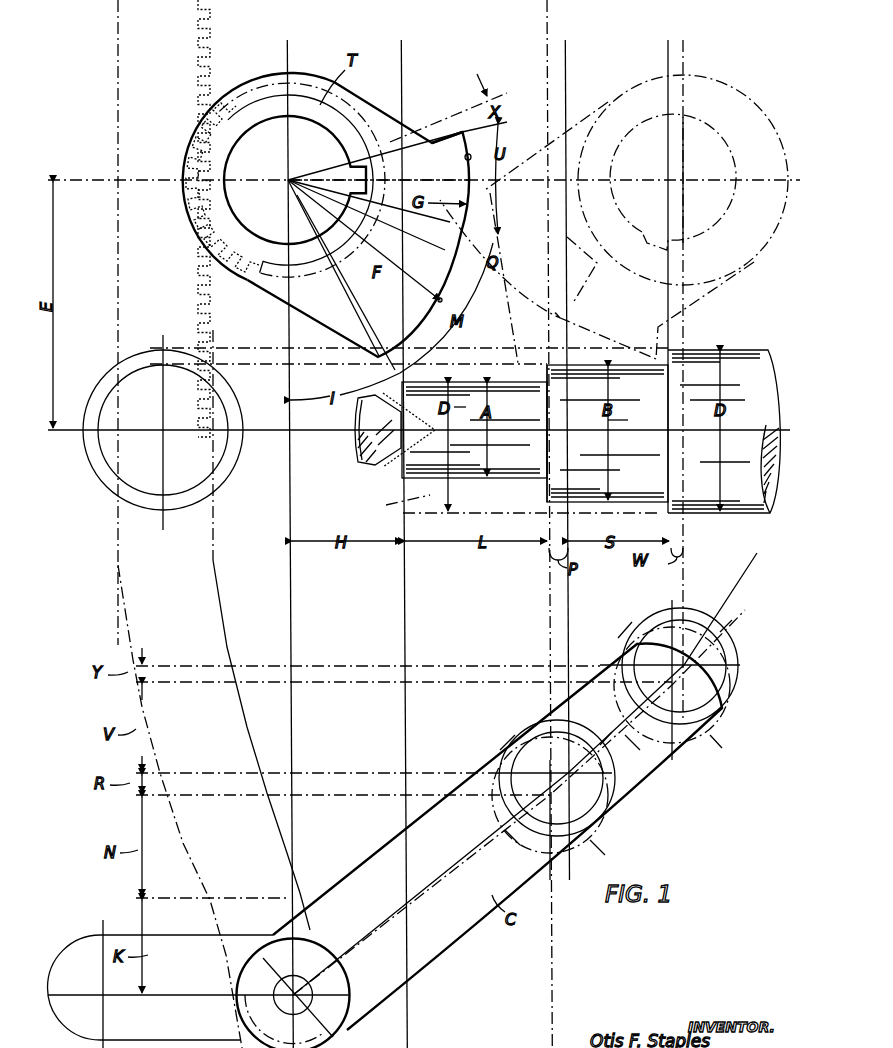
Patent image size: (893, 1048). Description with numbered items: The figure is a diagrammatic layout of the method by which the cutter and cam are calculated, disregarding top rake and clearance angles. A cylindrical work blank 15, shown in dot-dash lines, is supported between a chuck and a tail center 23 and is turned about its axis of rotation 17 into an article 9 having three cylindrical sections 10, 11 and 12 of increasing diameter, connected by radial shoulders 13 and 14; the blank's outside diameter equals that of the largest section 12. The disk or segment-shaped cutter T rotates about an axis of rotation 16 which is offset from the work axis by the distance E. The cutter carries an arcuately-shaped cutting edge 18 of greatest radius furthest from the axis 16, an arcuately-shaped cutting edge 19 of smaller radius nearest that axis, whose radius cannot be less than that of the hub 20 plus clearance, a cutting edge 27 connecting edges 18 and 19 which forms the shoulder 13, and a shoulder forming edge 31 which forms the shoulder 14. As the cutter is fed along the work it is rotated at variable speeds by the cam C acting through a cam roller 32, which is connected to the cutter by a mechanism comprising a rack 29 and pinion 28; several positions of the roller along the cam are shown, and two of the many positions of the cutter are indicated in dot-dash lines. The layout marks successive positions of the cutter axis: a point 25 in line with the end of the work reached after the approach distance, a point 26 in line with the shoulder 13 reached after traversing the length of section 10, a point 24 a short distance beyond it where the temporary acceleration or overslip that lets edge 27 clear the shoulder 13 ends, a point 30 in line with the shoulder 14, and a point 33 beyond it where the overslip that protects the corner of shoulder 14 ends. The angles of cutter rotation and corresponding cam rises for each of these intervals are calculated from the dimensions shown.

The article 9 is at (132, 484).
The first cylindrical section 10 is at (463, 478).
The second cylindrical section 11 is at (572, 503).
The third cylindrical section 12 is at (736, 512).
The radial shoulder 13 is at (546, 480).
The radial shoulder 14 is at (668, 504).
The work blank 15 is at (401, 508).
The axis of rotation of the tool 16 is at (288, 180).
The axis of rotation of the work blank 17 is at (628, 430).
The arcuately-shaped cutting edge 18 is at (442, 306).
The arcuately-shaped cutting edge 19 is at (464, 158).
The hub 20 is at (192, 202).
The tail center 23 is at (360, 468).
The point 24 is at (574, 180).
The point 25 is at (410, 180).
The point 26 is at (546, 188).
The cutting edge 27 is at (448, 252).
The pinion 28 is at (195, 272).
The rack 29 is at (153, 577).
The point 30 is at (668, 180).
The shoulder forming edge 31 is at (450, 132).
The cam roller 32 is at (335, 1022).
The point 33 is at (686, 180).